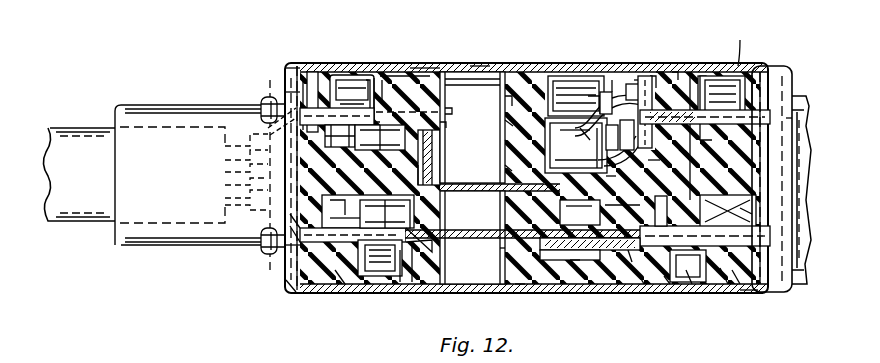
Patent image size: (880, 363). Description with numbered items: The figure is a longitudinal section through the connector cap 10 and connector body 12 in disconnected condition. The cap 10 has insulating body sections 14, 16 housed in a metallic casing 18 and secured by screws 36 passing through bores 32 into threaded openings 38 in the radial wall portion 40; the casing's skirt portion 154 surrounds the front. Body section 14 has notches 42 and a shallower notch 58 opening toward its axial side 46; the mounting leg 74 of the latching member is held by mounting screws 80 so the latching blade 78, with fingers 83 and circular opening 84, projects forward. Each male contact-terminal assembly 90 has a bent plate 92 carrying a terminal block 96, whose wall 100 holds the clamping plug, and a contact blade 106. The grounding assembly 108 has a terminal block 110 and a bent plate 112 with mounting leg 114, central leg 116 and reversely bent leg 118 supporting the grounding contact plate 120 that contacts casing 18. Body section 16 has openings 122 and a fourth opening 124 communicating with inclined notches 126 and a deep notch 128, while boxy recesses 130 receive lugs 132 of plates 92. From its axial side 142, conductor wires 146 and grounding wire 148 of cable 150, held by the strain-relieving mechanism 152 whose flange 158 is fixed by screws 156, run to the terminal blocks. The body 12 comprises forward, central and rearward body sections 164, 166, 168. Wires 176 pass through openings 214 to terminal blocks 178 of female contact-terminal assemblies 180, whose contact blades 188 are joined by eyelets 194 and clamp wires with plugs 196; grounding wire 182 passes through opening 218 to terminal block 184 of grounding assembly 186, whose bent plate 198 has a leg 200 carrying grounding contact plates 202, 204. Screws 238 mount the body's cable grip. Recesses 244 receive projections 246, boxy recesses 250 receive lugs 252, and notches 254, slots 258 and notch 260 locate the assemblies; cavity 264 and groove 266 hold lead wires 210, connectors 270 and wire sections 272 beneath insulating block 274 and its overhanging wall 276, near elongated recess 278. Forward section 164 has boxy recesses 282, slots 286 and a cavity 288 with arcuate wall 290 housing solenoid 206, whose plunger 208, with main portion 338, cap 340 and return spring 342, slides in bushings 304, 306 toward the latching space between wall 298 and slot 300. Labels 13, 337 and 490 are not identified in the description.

The connector cap 10 is at (320, 290).
The connector body 12 is at (746, 36).
The section line 13 is at (42, 196).
The body section 14 is at (441, 93).
The body section 16 is at (290, 250).
The metallic casing 18 is at (423, 71).
The bores 32 is at (446, 112).
The screws 36 is at (446, 126).
The threaded openings 38 is at (290, 136).
The radial wall portion 40 is at (286, 90).
The notches 42 is at (400, 280).
The axial side 46 is at (413, 250).
The fourth notch 58 is at (371, 80).
The mounting leg 74 is at (426, 161).
The latching blade 78 is at (450, 194).
The mounting screws 80 is at (427, 150).
The fingers 83 is at (488, 196).
The circular opening 84 is at (480, 192).
The male power transmitting contact-terminal assemblies 90 is at (451, 254).
The bent flat elongated metallic plate 92 is at (428, 233).
The terminal block 96 is at (366, 276).
The wall 100 is at (382, 272).
The contact blade 106 is at (500, 248).
The grounding contact-terminal assembly 108 is at (376, 150).
The terminal block 110 is at (356, 78).
The bent plate 112 is at (380, 93).
The mounting leg 114 is at (345, 144).
The central leg 116 is at (372, 114).
The reversely bent leg 118 is at (406, 74).
The grounding contact plate 120 is at (386, 80).
The circular openings 122 is at (293, 292).
The fourth circular opening 124 is at (310, 72).
The inclined notches 126 is at (340, 284).
The deep rectangular notch 128 is at (313, 68).
The boxy recesses 130 is at (352, 192).
The projecting lugs 132 is at (351, 208).
The axial side 142 is at (300, 200).
The power carrying conductor wires 146 is at (224, 166).
The fourth wire 148 is at (330, 108).
The sheathed multi-wire electrical cable 150 is at (72, 130).
The cable-gripping strain-relieving mechanism 152 is at (172, 113).
The annular projecting skirt portion 154 is at (483, 66).
The mounting screws 156 is at (266, 105).
The mounting flange 158 is at (286, 67).
The forward body section 164 is at (560, 282).
The central body section 166 is at (641, 282).
The rearward body section 168 is at (736, 276).
The wires 176 is at (725, 282).
The terminal blocks 178 is at (690, 276).
The female contact-terminal assemblies 180 is at (625, 248).
The fourth wire 182 is at (779, 76).
The terminal block 184 is at (746, 76).
The grounding contact-terminal assembly 186 is at (693, 136).
The contact blades 188 is at (610, 246).
The eyelets 194 is at (681, 226).
The adjustable plugs 196 is at (700, 272).
The bent plate 198 is at (681, 113).
The bent leg 200 is at (676, 72).
The grounding contact plate 202 is at (365, 226).
The grounding contact plate 204 is at (656, 88).
The solenoid 206 is at (541, 95).
The plunger pin 208 is at (510, 146).
The lead wires 210 is at (586, 136).
The circular openings 214 is at (746, 289).
The fourth circular opening 218 is at (792, 121).
The screws 238 is at (801, 96).
The positioning recesses 244 is at (735, 126).
The axial projections 246 is at (746, 126).
The boxy recesses 250 is at (732, 222).
The projecting lugs 252 is at (738, 226).
The notches 254 is at (668, 282).
The axial slots 258 is at (632, 256).
The fourth notch 260 is at (730, 74).
The cavity 264 is at (655, 160).
The deep axial groove 266 is at (660, 70).
The connectors 270 is at (645, 96).
The wire sections 272 is at (625, 170).
The insulating block 274 is at (640, 84).
The overhanging wall 276 is at (614, 90).
The elongated recess 278 is at (612, 176).
The boxy recesses 282 is at (472, 236).
The elongated slots 286 is at (520, 285).
The cavity 288 is at (512, 127).
The arcuate forward wall 290 is at (510, 105).
The flat wall 298 is at (595, 200).
The elongated slot 300 is at (510, 171).
The metal bushing 304 is at (575, 172).
The metal bushing 306 is at (588, 215).
The board 337 is at (580, 131).
The main cylindrical portion 338 is at (553, 168).
The cup-shaped cap 340 is at (559, 96).
The return spring 342 is at (589, 95).
The plate 490 is at (576, 283).